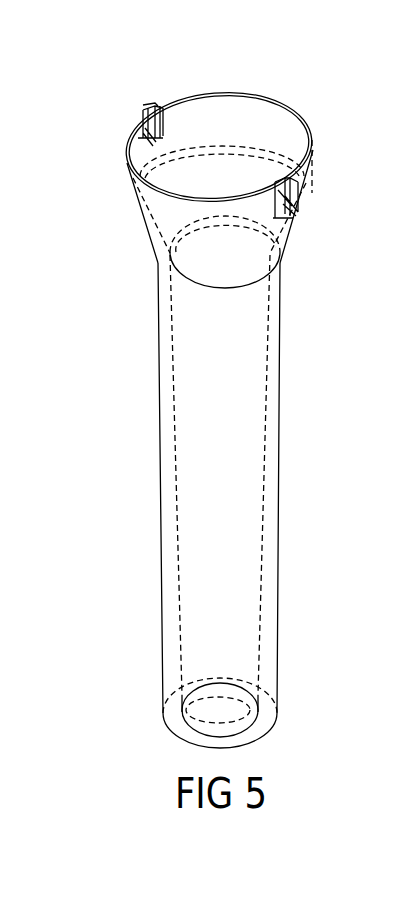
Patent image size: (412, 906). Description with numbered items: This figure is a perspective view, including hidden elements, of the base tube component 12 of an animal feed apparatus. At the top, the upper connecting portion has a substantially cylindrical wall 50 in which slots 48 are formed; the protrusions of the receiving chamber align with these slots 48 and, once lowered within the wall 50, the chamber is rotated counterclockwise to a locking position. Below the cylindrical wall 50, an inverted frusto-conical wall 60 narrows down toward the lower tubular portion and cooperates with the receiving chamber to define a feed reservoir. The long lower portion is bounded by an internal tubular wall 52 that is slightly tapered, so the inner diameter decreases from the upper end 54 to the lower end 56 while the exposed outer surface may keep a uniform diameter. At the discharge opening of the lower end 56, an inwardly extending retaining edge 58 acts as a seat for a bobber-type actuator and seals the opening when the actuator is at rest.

The base tube component 12 is at (118, 113).
The slot 48 is at (305, 191).
The cylindrical wall 50 is at (160, 213).
The internal tubular wall 52 is at (268, 484).
The upper end 54 is at (137, 265).
The lower end 56 is at (145, 692).
The retaining edge 58 is at (245, 738).
The frusto-conical wall 60 is at (292, 240).